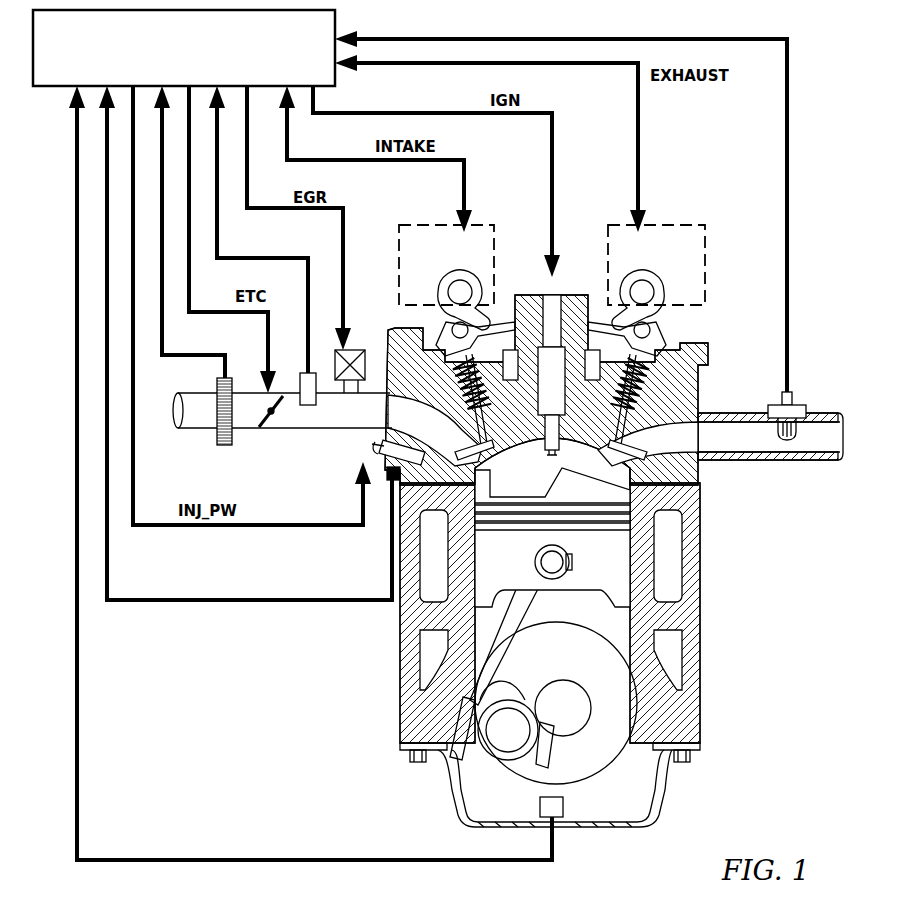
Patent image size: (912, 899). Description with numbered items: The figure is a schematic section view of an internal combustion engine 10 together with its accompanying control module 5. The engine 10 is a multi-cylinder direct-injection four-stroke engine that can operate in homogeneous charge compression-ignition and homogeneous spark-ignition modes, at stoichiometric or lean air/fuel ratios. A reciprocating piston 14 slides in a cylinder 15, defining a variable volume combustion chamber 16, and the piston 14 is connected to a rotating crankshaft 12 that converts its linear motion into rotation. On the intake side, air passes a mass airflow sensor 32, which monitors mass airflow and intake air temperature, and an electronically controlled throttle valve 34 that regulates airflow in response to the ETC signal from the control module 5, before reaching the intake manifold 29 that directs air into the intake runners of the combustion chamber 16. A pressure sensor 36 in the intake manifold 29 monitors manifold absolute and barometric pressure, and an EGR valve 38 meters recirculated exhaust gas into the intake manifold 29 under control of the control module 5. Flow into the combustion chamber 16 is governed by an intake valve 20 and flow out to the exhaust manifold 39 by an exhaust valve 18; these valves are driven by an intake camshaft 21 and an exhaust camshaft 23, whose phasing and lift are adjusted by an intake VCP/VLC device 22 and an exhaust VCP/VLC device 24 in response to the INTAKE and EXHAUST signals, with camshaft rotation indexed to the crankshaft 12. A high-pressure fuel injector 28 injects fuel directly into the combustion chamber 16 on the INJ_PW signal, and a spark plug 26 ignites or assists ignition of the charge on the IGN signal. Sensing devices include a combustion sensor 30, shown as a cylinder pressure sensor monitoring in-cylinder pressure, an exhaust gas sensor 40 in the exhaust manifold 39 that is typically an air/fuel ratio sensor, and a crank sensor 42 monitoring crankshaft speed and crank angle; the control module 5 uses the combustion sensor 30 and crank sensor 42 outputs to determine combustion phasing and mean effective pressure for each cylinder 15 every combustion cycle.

The control module 5 is at (318, 27).
The internal combustion engine 10 is at (702, 612).
The crankshaft 12 is at (605, 762).
The piston 14 is at (572, 562).
The cylinder 15 is at (632, 492).
The combustion chamber 16 is at (552, 537).
The exhaust valve 18 is at (628, 447).
The intake valve 20 is at (452, 432).
The intake camshaft 21 is at (460, 292).
The intake variable cam phasing/variable lift control device 22 is at (490, 228).
The exhaust camshaft 23 is at (645, 294).
The exhaust variable cam phasing/variable lift control device 24 is at (693, 284).
The spark plug 26 is at (556, 278).
The fuel injector 28 is at (375, 452).
The intake manifold 29 is at (377, 400).
The combustion sensor 30 is at (392, 480).
The mass airflow sensor 32 is at (222, 442).
The throttle valve 34 is at (266, 425).
The pressure sensor 36 is at (308, 402).
The exhaust gas recirculation valve 38 is at (348, 385).
The exhaust manifold 39 is at (737, 413).
The exhaust gas sensor 40 is at (792, 405).
The crank sensor 42 is at (555, 815).